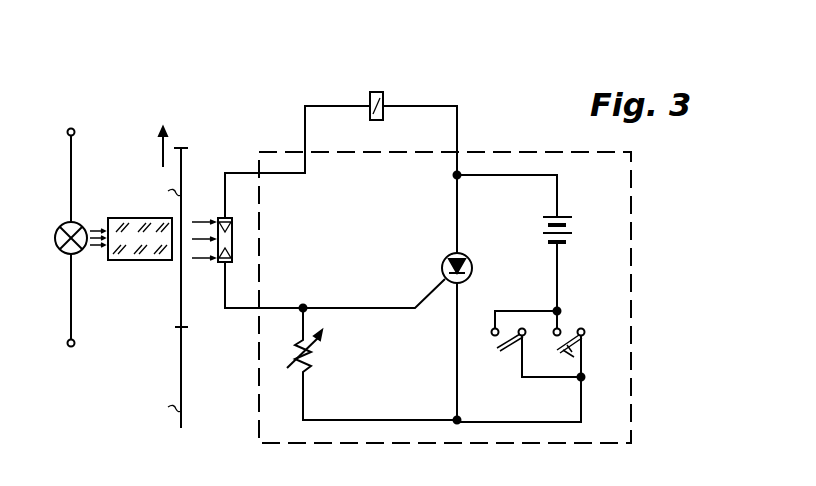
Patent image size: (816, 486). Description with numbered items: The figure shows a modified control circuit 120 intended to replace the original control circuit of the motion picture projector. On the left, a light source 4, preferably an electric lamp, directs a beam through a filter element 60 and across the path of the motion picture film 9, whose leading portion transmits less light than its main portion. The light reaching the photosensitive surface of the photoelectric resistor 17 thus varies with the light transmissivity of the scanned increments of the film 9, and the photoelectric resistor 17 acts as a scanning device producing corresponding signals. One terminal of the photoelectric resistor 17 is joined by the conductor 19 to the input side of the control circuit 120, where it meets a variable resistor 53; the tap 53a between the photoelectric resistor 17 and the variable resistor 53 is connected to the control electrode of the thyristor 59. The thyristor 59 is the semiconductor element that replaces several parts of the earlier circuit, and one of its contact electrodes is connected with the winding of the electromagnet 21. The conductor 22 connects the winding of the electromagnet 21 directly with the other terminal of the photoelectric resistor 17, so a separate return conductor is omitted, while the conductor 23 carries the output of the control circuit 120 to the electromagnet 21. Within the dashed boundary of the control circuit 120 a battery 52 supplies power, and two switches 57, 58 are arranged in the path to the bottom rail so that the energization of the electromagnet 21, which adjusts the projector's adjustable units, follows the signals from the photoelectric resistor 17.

The light source 4 is at (84, 256).
The filter 60 is at (148, 262).
The motion picture film 9 is at (178, 375).
The photoelectric resistor 17 is at (218, 218).
The conductor 19 is at (238, 311).
The electromagnet 21 is at (383, 113).
The conductor 22 is at (316, 106).
The conductor 23 is at (445, 107).
The modified control circuit 120 is at (278, 108).
The battery 52 is at (543, 228).
The variable resistor 53 is at (312, 355).
The tap 53a is at (308, 305).
The switch 57 is at (566, 338).
The switch 58 is at (497, 343).
The thyristor 59 is at (442, 263).